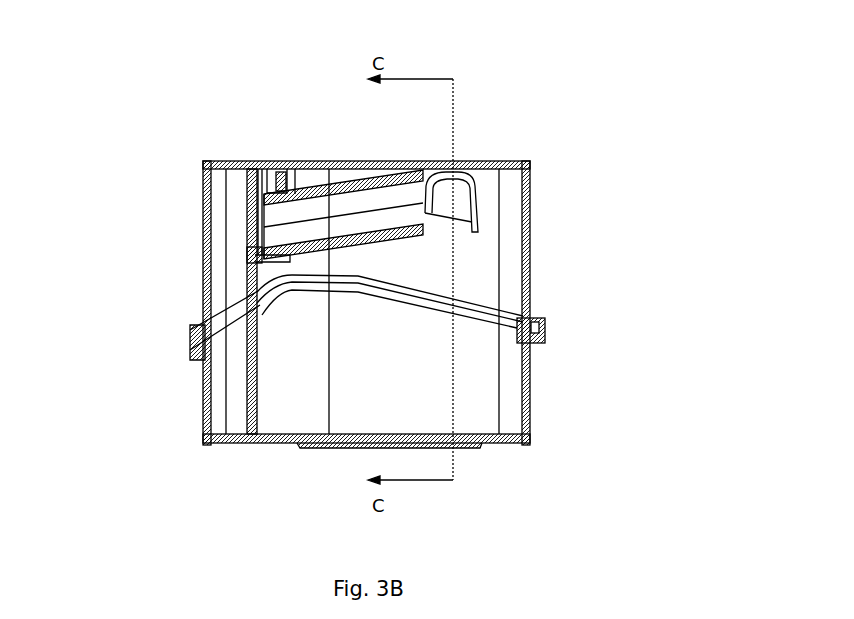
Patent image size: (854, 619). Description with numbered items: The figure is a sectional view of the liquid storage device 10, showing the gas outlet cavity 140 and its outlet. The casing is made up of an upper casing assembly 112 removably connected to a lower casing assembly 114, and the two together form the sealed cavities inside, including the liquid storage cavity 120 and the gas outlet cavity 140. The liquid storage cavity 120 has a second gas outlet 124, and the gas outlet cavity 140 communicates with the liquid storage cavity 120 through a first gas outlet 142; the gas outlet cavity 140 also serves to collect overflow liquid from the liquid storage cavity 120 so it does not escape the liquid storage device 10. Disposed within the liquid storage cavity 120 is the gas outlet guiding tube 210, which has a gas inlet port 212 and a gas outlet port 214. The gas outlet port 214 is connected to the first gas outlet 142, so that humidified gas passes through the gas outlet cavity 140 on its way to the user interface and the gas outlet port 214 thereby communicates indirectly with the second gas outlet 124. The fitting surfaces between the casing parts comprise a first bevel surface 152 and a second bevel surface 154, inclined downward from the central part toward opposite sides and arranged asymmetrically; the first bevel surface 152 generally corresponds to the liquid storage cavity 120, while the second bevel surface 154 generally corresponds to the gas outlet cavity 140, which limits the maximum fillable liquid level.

The liquid storage device 10 is at (250, 34).
The upper casing assembly 112 is at (528, 224).
The lower casing assembly 114 is at (531, 405).
The liquid storage cavity 120 is at (268, 415).
The second gas outlet 124 is at (207, 248).
The gas outlet cavity 140 is at (215, 216).
The first gas outlet 142 is at (252, 216).
The first bevel surface 152 is at (497, 307).
The second bevel surface 154 is at (214, 314).
The gas outlet guiding tube 210 is at (355, 184).
The gas inlet port 212 is at (463, 187).
The gas outlet port 214 is at (272, 217).